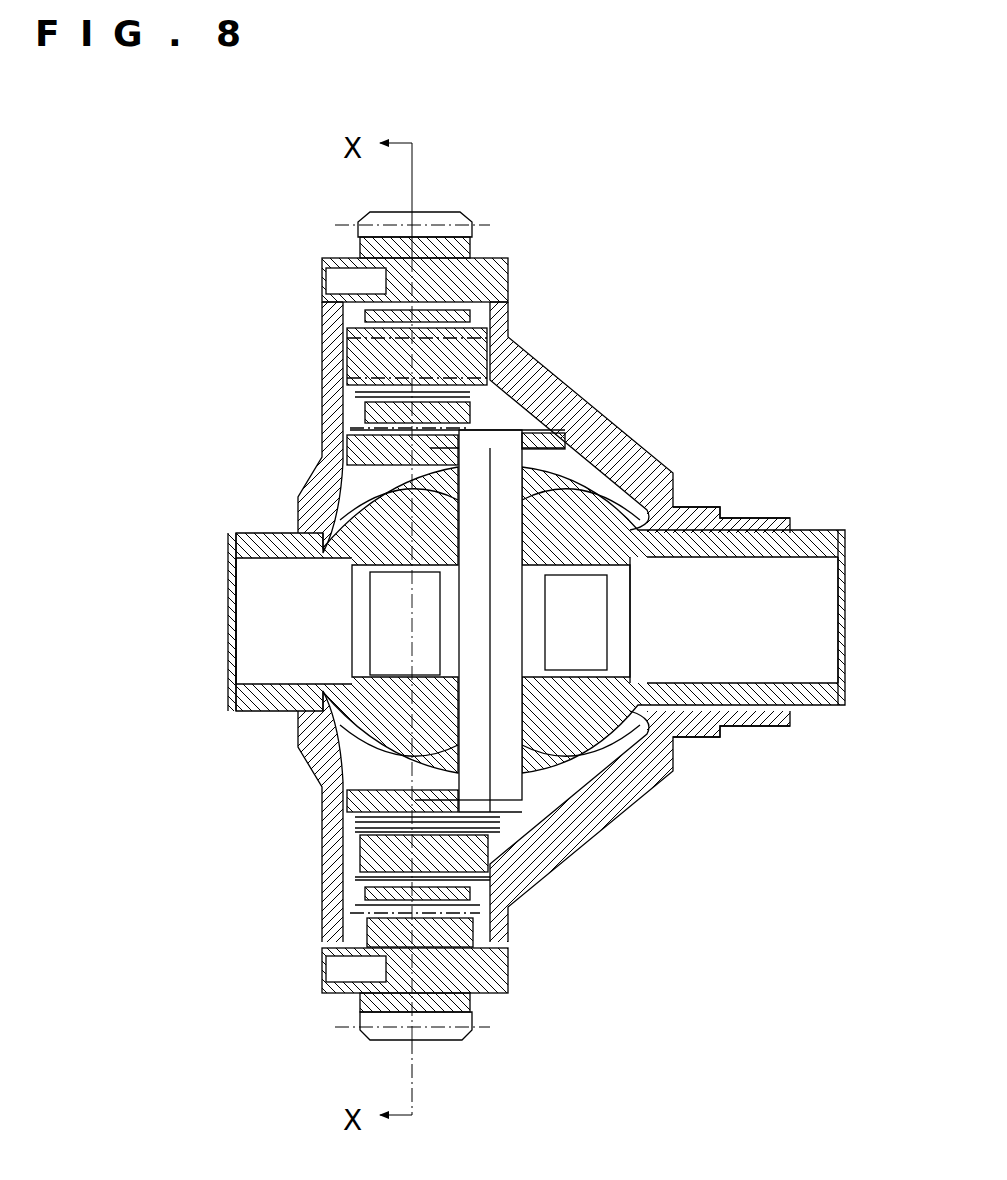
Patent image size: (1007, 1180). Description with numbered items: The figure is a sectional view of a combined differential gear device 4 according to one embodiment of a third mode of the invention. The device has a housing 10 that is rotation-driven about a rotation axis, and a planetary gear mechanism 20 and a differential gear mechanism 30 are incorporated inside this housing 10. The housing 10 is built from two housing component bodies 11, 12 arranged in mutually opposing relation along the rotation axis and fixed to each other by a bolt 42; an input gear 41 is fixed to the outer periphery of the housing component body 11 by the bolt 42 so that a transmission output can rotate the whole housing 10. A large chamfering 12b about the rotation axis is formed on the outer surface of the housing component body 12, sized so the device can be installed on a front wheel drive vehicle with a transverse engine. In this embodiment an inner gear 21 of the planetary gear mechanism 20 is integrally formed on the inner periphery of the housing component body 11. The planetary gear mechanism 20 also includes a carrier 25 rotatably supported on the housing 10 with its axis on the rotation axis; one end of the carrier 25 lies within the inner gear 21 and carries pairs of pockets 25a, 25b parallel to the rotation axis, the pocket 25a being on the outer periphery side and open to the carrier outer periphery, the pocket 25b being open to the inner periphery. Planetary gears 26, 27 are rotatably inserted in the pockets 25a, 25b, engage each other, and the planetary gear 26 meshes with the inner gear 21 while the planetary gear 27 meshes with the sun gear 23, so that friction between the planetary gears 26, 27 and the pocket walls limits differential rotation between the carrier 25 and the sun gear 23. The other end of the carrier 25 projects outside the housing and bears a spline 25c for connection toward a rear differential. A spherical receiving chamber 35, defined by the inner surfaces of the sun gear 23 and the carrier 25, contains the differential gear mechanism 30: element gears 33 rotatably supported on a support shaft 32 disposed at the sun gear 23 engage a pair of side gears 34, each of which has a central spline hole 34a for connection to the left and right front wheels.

The combined differential gear device 4 is at (543, 168).
The housing 10 is at (306, 770).
The housing component body 11 is at (322, 312).
The housing component body 12 is at (508, 320).
The chamfering 12b is at (628, 812).
The planetary gear mechanism 20 is at (470, 356).
The inner gear 21 is at (347, 356).
The sun gear 23 is at (347, 448).
The carrier 25 is at (546, 440).
The pocket 25a is at (365, 410).
The pocket 25b is at (360, 848).
The spline 25c is at (824, 530).
The planetary gear 26 is at (498, 372).
The planetary gear 27 is at (516, 896).
The differential gear mechanism 30 is at (673, 498).
The support shaft 32 is at (588, 452).
The element gear 33 is at (600, 490).
The side gear 34 is at (352, 503).
The spline hole 34a is at (402, 668).
The receiving chamber 35 is at (650, 765).
The input gear 41 is at (442, 212).
The bolt 42 is at (508, 268).